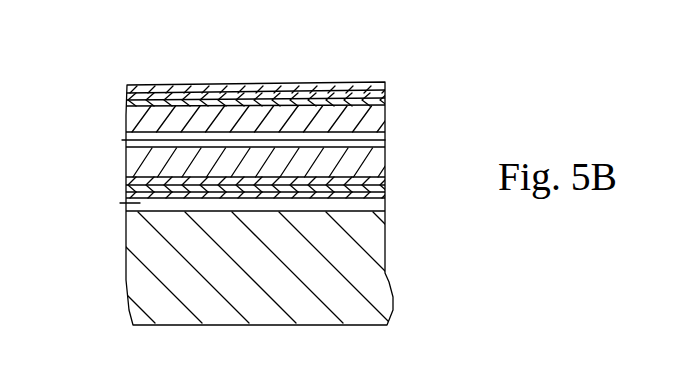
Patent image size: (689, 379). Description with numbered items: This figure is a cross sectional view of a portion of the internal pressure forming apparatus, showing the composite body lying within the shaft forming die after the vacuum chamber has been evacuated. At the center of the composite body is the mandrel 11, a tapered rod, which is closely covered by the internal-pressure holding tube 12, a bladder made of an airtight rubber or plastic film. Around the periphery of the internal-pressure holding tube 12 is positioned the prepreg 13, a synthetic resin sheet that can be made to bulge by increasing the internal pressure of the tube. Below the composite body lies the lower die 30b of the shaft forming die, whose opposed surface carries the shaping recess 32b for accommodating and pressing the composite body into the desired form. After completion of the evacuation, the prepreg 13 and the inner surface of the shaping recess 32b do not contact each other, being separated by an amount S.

The mandrel 11 is at (372, 163).
The internal-pressure holding tube 12 is at (383, 97).
The prepreg 13 is at (385, 83).
The lower die 30b is at (165, 300).
The shaping recess 32b is at (217, 211).
The amount S is at (120, 203).